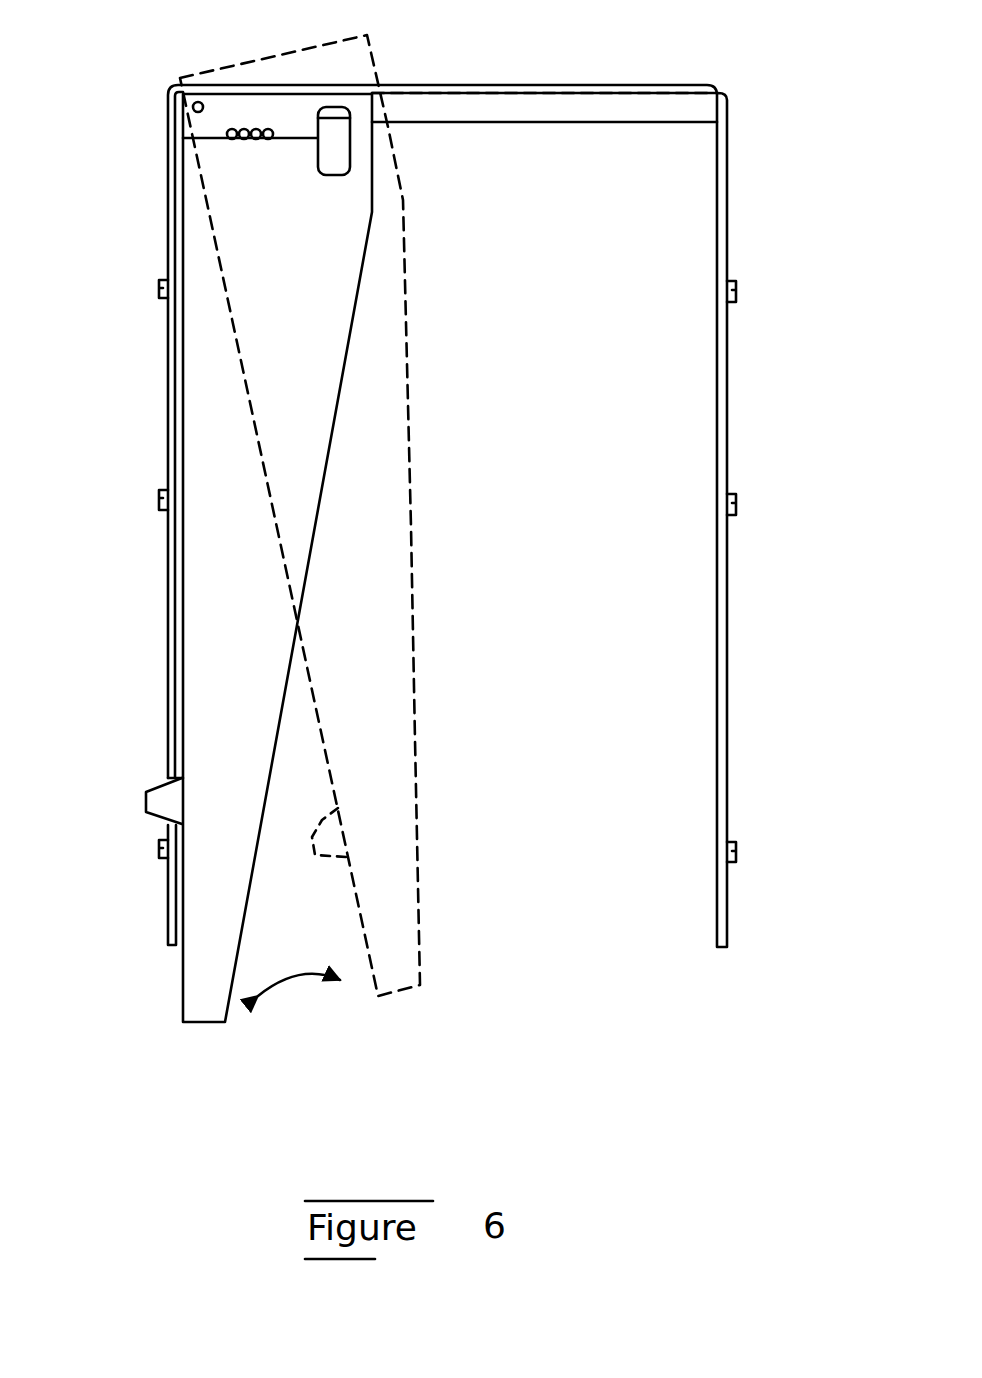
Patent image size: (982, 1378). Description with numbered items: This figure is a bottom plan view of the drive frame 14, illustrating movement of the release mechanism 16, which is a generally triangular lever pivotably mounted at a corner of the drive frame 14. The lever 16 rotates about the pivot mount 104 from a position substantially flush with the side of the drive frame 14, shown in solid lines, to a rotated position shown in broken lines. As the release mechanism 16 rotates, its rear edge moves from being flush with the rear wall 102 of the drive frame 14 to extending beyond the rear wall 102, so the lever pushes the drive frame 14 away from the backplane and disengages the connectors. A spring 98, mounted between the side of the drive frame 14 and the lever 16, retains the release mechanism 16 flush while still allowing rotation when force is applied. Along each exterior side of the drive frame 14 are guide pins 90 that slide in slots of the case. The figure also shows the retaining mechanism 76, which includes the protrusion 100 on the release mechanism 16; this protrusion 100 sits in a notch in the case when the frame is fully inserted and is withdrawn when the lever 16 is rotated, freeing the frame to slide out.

The drive frame 14 is at (790, 630).
The release mechanism 16 is at (221, 1014).
The retaining mechanism 76 is at (138, 746).
The guide pins 90 is at (160, 286).
The spring 98 is at (266, 142).
The protrusion 100 is at (147, 803).
The rear wall 102 is at (641, 85).
The pivot mount 104 is at (198, 100).